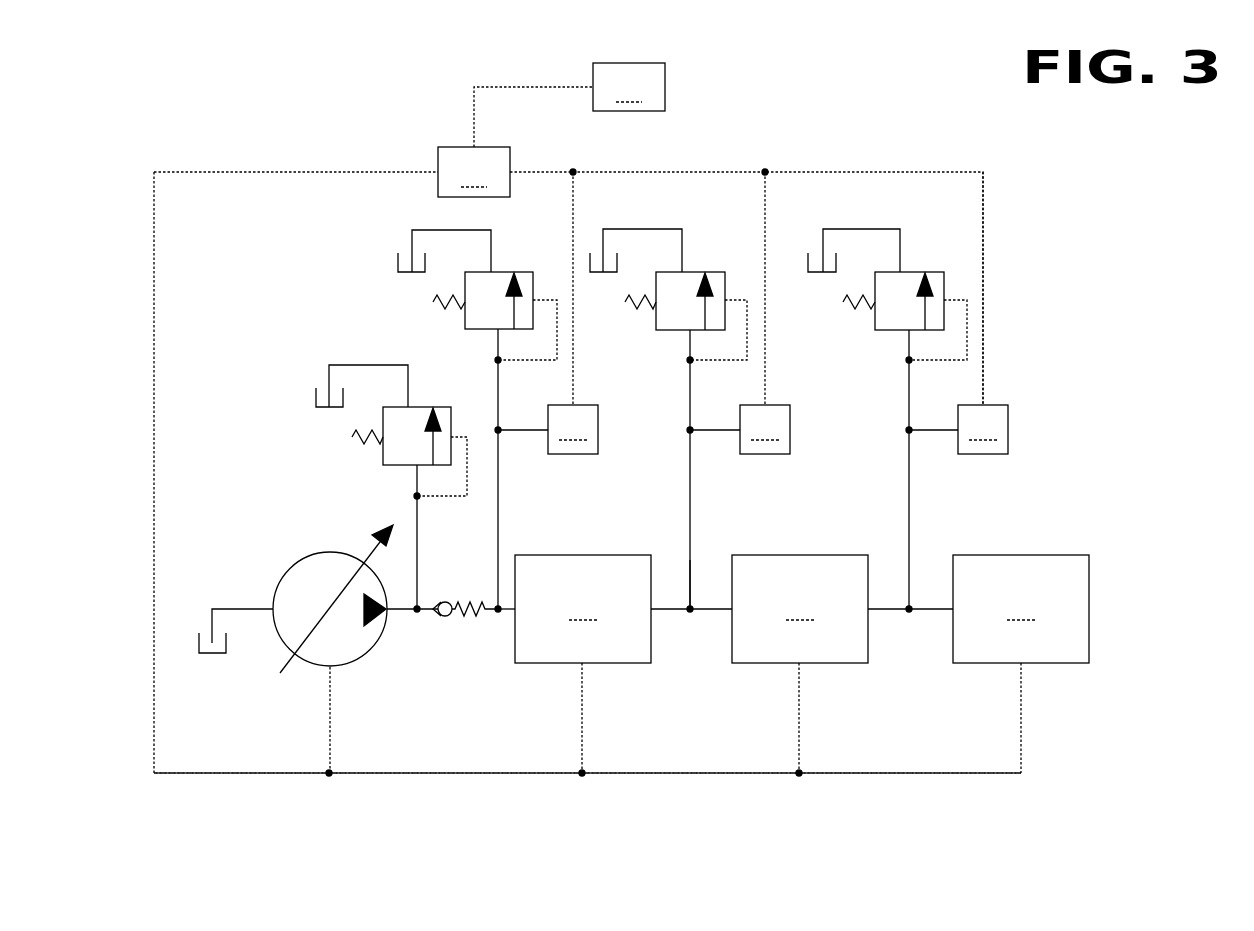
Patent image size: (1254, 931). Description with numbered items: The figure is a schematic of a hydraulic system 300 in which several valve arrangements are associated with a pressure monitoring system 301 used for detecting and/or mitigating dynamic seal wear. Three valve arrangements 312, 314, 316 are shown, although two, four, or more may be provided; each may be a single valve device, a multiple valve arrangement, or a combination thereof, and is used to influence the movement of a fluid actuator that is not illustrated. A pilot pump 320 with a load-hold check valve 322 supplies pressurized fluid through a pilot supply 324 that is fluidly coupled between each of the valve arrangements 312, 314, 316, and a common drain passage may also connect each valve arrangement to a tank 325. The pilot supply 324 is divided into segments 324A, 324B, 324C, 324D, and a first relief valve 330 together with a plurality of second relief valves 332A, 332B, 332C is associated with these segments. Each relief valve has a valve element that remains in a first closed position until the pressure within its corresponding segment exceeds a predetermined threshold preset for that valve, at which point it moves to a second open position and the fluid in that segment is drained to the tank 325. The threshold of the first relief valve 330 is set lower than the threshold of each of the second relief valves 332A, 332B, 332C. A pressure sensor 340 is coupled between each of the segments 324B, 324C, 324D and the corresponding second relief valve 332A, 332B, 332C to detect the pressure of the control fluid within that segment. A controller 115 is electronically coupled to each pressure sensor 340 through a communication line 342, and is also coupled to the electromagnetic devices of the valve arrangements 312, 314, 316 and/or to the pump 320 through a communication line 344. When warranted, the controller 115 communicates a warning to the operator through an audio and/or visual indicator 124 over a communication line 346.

The audio and/or visual indicator 124 is at (629, 87).
The controller 115 is at (474, 172).
The hydraulic system 300 is at (631, 172).
The pressure monitoring system 301 is at (258, 492).
The valve arrangement 312 is at (583, 664).
The valve arrangement 314 is at (800, 664).
The valve arrangement 316 is at (1021, 664).
The pilot pump 320 is at (352, 662).
The load-hold check valve 322 is at (465, 618).
The pilot supply 324 is at (676, 612).
The pilot supply segment 324A is at (400, 612).
The pilot supply segment 324B is at (497, 600).
The pilot supply segment 324C is at (703, 607).
The pilot supply segment 324D is at (880, 612).
The tank 325 is at (398, 265).
The first relief valve 330 is at (385, 466).
The second relief valve 332A is at (500, 272).
The second relief valve 332B is at (693, 272).
The second relief valve 332C is at (906, 272).
The pressure sensor 340 is at (753, 429).
The communication line 342 is at (862, 172).
The communication line 344 is at (424, 773).
The communication line 346 is at (474, 103).